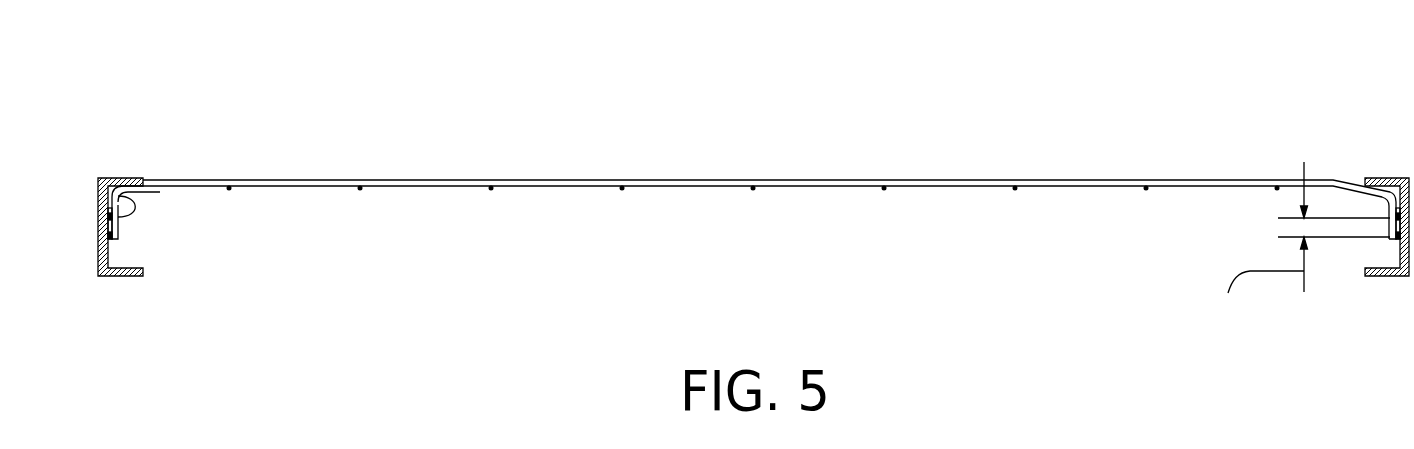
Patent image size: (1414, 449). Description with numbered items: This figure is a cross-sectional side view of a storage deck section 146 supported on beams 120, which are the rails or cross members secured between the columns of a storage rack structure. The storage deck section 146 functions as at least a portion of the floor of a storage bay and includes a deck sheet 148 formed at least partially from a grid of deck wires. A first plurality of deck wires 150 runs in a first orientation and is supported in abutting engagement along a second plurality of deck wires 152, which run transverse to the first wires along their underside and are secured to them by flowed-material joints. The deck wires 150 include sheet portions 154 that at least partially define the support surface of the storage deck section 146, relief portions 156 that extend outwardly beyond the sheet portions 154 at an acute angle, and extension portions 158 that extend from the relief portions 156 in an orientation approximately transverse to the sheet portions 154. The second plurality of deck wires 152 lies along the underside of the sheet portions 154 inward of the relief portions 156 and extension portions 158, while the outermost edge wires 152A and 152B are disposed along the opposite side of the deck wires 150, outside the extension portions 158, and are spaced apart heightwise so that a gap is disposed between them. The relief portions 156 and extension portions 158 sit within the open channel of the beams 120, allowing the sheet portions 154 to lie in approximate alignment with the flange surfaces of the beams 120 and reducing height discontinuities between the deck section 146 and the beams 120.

The beam 120 is at (100, 170).
The storage deck section 146 is at (903, 118).
The deck sheet 148 is at (770, 153).
The first plurality of deck wires 150 is at (685, 180).
The second plurality of deck wires 152 is at (622, 190).
The edge wire 152A is at (135, 178).
The edge wire 152B is at (110, 248).
The sheet portion 154 is at (540, 180).
The relief portion 156 is at (152, 178).
The extension portion 158 is at (117, 228).